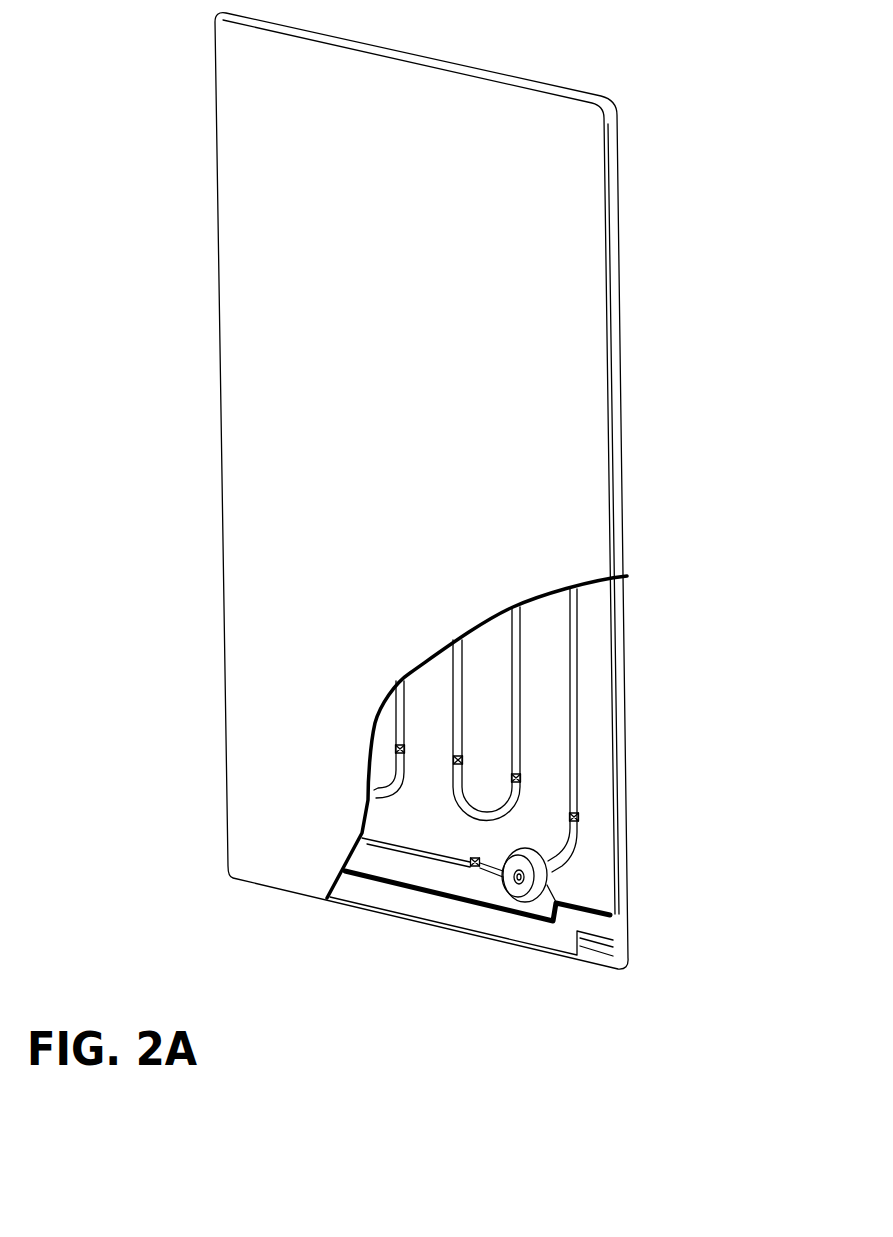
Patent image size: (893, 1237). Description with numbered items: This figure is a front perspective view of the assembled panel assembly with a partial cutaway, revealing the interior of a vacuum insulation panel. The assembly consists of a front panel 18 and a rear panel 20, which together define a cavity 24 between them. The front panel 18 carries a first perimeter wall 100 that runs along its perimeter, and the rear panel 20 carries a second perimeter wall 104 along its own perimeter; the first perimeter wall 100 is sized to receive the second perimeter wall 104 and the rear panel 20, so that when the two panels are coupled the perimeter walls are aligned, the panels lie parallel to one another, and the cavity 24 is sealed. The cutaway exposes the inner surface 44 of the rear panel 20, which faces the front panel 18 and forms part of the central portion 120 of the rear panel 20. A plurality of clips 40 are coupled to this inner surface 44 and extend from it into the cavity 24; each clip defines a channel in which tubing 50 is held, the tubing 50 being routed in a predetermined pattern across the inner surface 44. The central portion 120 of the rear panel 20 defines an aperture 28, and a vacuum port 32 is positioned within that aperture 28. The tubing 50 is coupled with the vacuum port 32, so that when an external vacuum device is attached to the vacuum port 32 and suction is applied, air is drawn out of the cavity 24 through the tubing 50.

The front panel 18 is at (548, 264).
The first perimeter wall 100 is at (613, 417).
The cavity 24 is at (542, 617).
The clips 40 is at (397, 750).
The second perimeter wall 104 is at (617, 658).
The tubing 50 is at (572, 712).
The rear panel 20 is at (628, 915).
The inner surface 44 is at (411, 819).
The central portion 120 is at (420, 871).
The vacuum port 32 is at (512, 888).
The aperture 28 is at (530, 905).